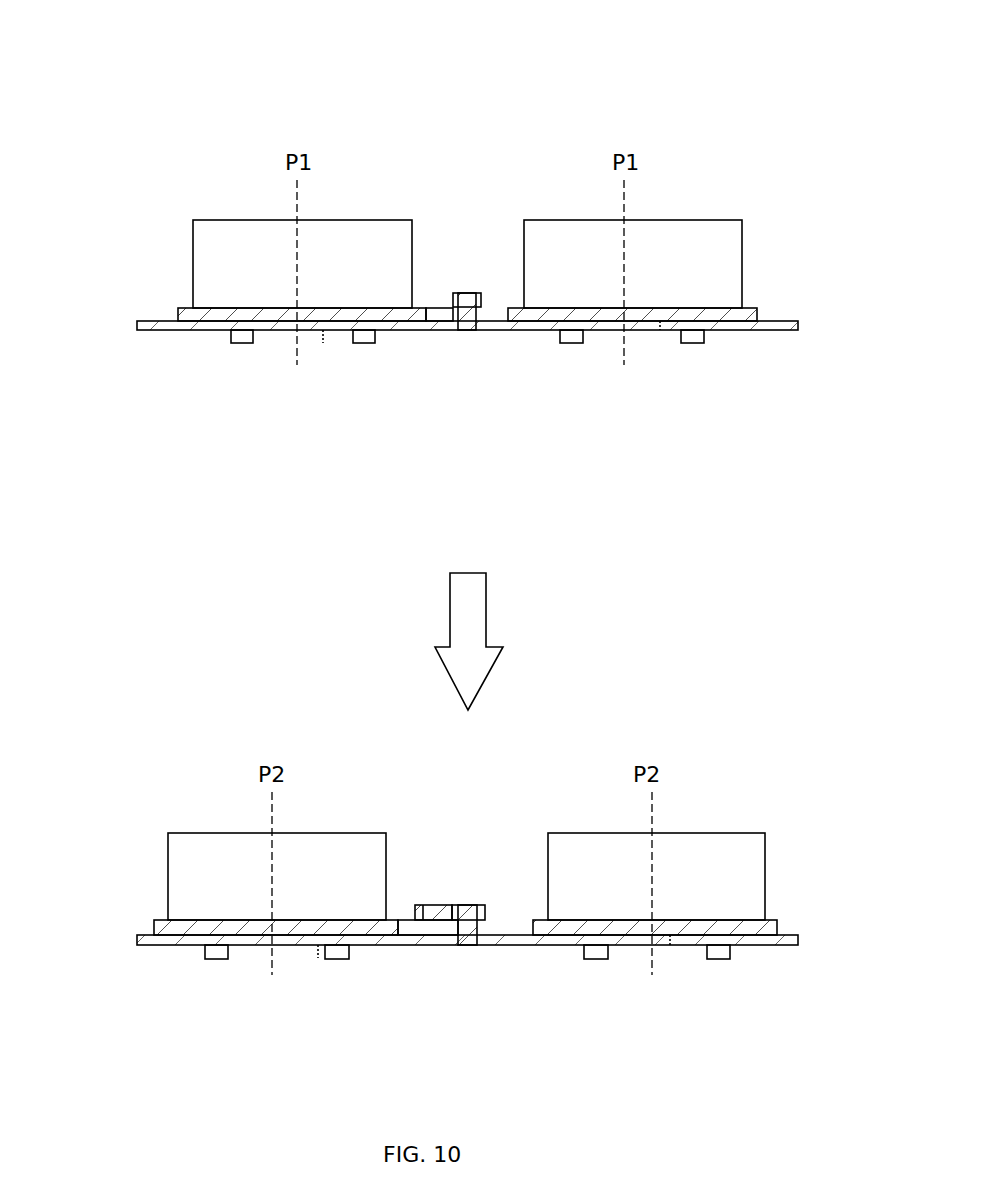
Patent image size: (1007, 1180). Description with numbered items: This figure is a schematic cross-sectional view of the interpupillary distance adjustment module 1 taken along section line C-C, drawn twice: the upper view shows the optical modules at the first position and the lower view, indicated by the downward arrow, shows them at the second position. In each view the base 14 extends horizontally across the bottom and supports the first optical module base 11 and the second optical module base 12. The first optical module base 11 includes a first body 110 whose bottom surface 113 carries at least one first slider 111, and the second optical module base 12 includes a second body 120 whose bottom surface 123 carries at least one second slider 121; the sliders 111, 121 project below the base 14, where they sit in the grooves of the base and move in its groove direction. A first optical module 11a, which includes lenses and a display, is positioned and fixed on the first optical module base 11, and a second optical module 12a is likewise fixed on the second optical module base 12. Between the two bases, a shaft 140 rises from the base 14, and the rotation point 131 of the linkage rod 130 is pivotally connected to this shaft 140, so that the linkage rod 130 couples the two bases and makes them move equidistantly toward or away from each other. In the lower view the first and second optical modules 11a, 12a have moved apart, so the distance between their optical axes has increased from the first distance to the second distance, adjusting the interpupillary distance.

The interpupillary distance adjustment module 1 is at (212, 98).
The first optical module base 11 is at (282, 613).
The first optical module 11a is at (203, 235).
The first body 110 is at (390, 330).
The first slider 111 is at (242, 343).
The bottom surface 113 is at (323, 343).
The second optical module base 12 is at (673, 625).
The second optical module 12a is at (733, 240).
The second body 120 is at (540, 330).
The second slider 121 is at (692, 343).
The bottom surface 123 is at (660, 330).
The linkage rod 130 is at (455, 335).
The rotation point 131 is at (460, 905).
The shaft 140 is at (471, 643).
The base 14 is at (137, 326).